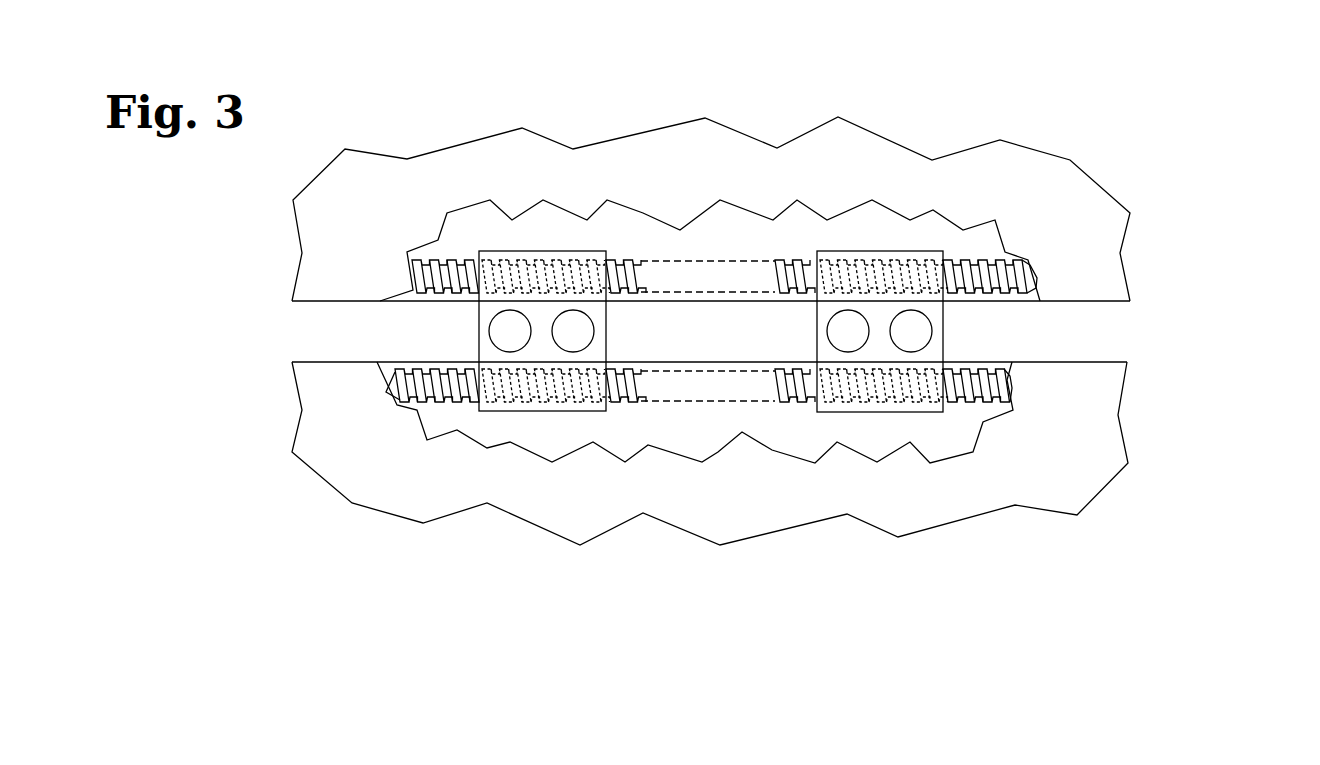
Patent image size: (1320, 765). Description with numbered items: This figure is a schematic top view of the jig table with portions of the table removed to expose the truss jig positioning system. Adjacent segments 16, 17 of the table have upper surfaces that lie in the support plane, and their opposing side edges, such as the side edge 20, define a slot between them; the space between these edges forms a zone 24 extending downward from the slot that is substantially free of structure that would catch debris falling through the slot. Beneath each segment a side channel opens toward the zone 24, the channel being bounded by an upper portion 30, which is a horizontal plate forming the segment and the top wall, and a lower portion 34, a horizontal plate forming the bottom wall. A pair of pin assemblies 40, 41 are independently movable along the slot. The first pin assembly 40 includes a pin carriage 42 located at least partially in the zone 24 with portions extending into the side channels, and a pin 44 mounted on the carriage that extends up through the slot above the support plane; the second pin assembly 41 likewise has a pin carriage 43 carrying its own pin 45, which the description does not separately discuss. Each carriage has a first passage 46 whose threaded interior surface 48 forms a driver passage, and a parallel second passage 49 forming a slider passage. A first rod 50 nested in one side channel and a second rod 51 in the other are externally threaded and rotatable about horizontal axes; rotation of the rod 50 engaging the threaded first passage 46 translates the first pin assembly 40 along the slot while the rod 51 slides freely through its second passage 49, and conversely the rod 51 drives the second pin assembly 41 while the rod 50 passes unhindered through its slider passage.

The segment 16 is at (955, 490).
The segment 17 is at (958, 183).
The side edge 20 is at (303, 302).
The zone 24 is at (1135, 338).
The upper portion 30 is at (1105, 285).
The lower portion 34 is at (707, 295).
The pin assembly 40 is at (361, 335).
The pin assembly 41 is at (1010, 337).
The pin carriage 42 is at (488, 303).
The pin carriage 43 is at (930, 305).
The pin 44 is at (510, 331).
The second anchor holes 45 is at (912, 330).
The first passage 46 is at (888, 263).
The interior surface 48 is at (520, 397).
The second passage 49 is at (852, 403).
The rod 50 is at (702, 402).
The rod 51 is at (690, 253).